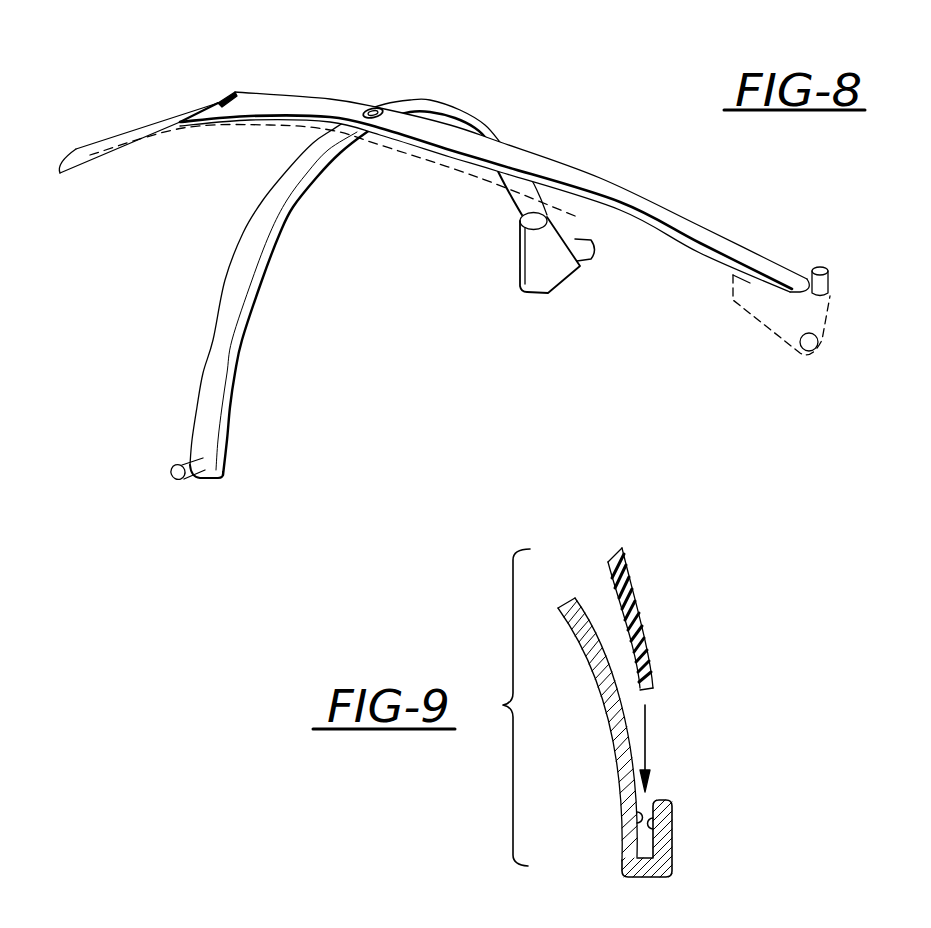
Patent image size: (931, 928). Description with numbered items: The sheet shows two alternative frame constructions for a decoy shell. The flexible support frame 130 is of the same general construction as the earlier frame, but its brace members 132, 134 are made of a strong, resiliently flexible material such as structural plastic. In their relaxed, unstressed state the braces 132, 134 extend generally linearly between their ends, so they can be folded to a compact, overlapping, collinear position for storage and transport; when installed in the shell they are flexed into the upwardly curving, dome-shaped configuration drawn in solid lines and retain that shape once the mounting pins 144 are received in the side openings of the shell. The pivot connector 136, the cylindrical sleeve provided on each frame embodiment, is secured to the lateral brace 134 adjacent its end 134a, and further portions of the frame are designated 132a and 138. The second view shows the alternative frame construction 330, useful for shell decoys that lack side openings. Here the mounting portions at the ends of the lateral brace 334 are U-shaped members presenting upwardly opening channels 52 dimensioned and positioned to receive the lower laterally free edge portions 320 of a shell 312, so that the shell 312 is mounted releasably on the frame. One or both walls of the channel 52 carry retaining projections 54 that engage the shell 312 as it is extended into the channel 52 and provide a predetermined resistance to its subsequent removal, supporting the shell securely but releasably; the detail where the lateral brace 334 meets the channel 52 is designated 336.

In FIG. 8, the flexible support frame 130 is at (588, 168).
In FIG. 8, the brace member 132 is at (722, 230).
In FIG. 8, the end portion of cross bow 132a is at (258, 100).
In FIG. 8, the lateral brace member 134 is at (263, 268).
In FIG. 8, the end of lateral brace 134a is at (522, 193).
In FIG. 8, the pivot connector 136 is at (522, 278).
In FIG. 8, the fastener 138 is at (377, 108).
In FIG. 8, the mounting pins 144 is at (592, 255).
In FIG. 9, the alternative frame construction 330 is at (581, 595).
In FIG. 9, the shell 312 is at (640, 608).
In FIG. 9, the lower laterally free edge portions 320 is at (653, 690).
In FIG. 9, the lateral brace 334 is at (593, 660).
In FIG. 9, the joint 336 is at (622, 847).
In FIG. 9, the channel 52 is at (647, 843).
In FIG. 9, the retaining projections 54 is at (640, 813).